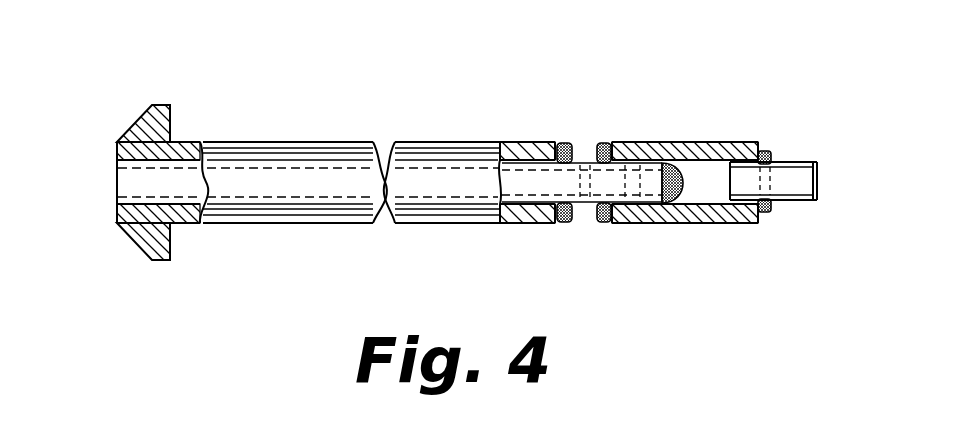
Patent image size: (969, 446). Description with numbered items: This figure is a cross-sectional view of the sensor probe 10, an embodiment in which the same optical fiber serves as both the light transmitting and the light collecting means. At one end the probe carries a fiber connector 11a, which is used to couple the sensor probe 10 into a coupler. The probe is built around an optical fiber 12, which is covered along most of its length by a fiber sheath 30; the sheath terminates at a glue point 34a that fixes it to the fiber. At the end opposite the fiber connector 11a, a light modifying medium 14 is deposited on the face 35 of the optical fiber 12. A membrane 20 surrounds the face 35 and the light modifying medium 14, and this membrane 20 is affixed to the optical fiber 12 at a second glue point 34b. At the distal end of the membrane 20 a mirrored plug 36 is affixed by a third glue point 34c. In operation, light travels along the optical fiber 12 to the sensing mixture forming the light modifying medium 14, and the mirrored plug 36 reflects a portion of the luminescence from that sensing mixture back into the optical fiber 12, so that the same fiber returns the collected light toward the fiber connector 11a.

The sensor probe 10 is at (424, 88).
The optical fiber 12 is at (130, 180).
The fiber connector 11a is at (160, 262).
The fiber sheath 30 is at (290, 216).
The light modifying medium 14 is at (680, 166).
The glue point 34a is at (569, 143).
The glue point 34b is at (601, 143).
The glue point 34c is at (769, 152).
The membrane 20 is at (697, 223).
The face 35 is at (671, 200).
The mirrored plug 36 is at (788, 188).